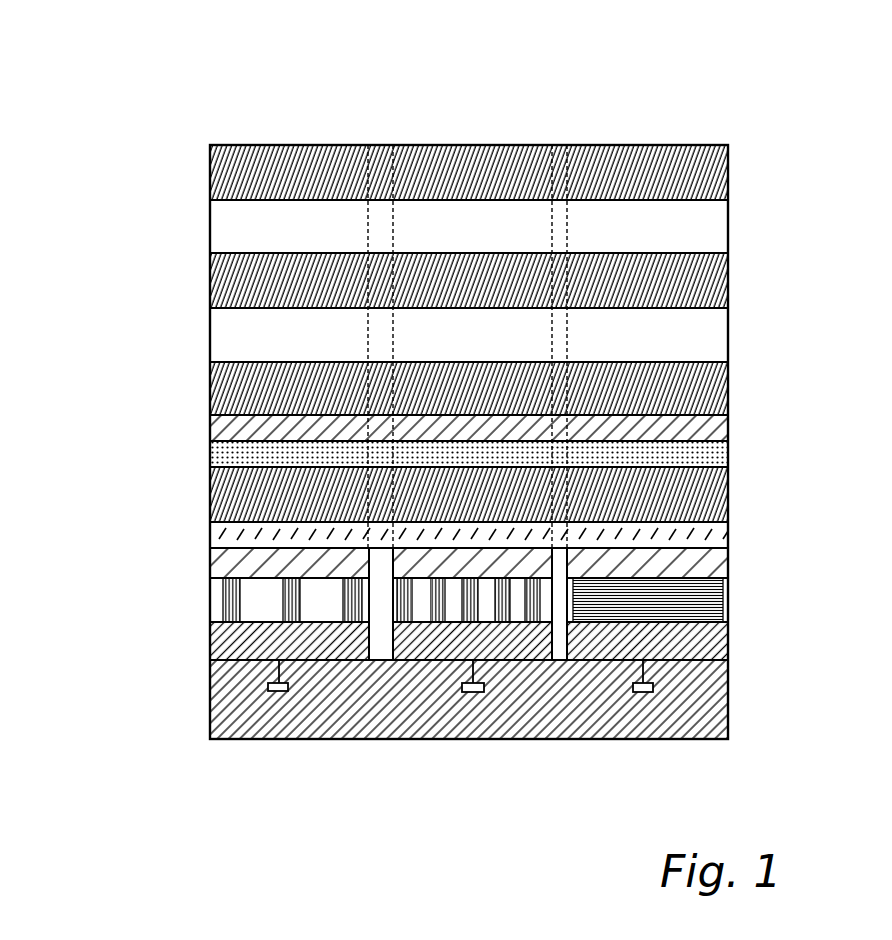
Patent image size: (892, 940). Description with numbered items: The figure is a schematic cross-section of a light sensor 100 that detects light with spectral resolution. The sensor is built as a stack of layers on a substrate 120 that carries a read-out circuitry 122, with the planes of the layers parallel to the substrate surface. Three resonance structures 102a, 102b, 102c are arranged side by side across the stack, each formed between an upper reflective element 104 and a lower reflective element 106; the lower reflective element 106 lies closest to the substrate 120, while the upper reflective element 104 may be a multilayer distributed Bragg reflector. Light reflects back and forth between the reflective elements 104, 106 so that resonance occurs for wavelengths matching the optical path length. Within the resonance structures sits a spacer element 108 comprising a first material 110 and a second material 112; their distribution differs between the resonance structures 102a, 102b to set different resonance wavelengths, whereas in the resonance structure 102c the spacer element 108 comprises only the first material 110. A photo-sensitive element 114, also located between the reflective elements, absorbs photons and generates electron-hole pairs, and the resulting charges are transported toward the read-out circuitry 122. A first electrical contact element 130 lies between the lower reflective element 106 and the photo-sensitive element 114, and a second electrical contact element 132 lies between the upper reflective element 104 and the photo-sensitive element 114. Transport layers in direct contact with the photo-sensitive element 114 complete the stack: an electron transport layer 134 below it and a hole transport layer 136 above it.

The light sensor 100 is at (173, 115).
The resonance structure 102a is at (292, 100).
The resonance structure 102b is at (472, 100).
The resonance structure 102c is at (642, 100).
The upper reflective element 104 is at (205, 146).
The lower reflective element 106 is at (208, 641).
The spacer element 108 is at (208, 600).
The first material 110 is at (419, 607).
The second material 112 is at (421, 608).
The photo-sensitive element 114 is at (208, 494).
The substrate 120 is at (208, 727).
The read-out circuitry 122 is at (268, 687).
The first electrical contact element 130 is at (208, 563).
The second electrical contact element 132 is at (208, 426).
The first transport layer 134 is at (208, 535).
The second transport layer 136 is at (208, 454).